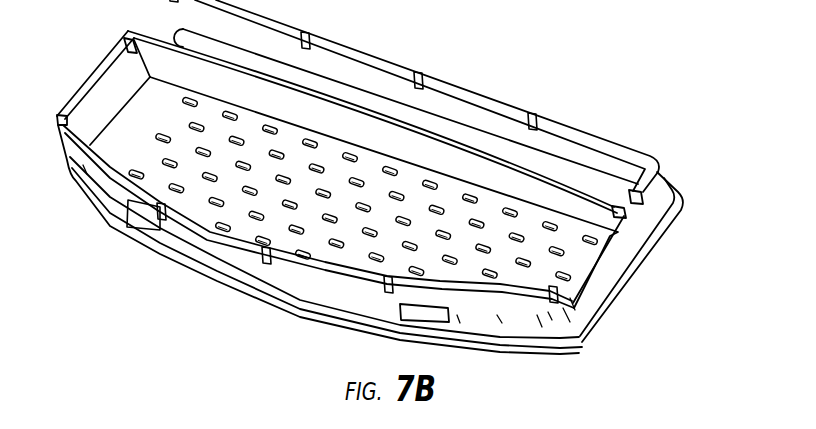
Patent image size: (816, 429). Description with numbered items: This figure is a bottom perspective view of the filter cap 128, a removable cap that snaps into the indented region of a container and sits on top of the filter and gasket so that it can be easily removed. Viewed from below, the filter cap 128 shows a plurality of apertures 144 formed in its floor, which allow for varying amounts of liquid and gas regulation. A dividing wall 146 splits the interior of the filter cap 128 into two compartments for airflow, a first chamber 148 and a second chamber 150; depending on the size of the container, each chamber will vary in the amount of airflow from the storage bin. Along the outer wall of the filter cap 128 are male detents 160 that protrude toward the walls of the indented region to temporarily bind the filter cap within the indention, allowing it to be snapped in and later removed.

The filter cap 128 is at (674, 181).
The apertures 144 is at (472, 197).
The dividing wall 146 is at (600, 213).
The first chamber 148 is at (549, 286).
The second chamber 150 is at (614, 167).
The male detents 160 is at (143, 216).